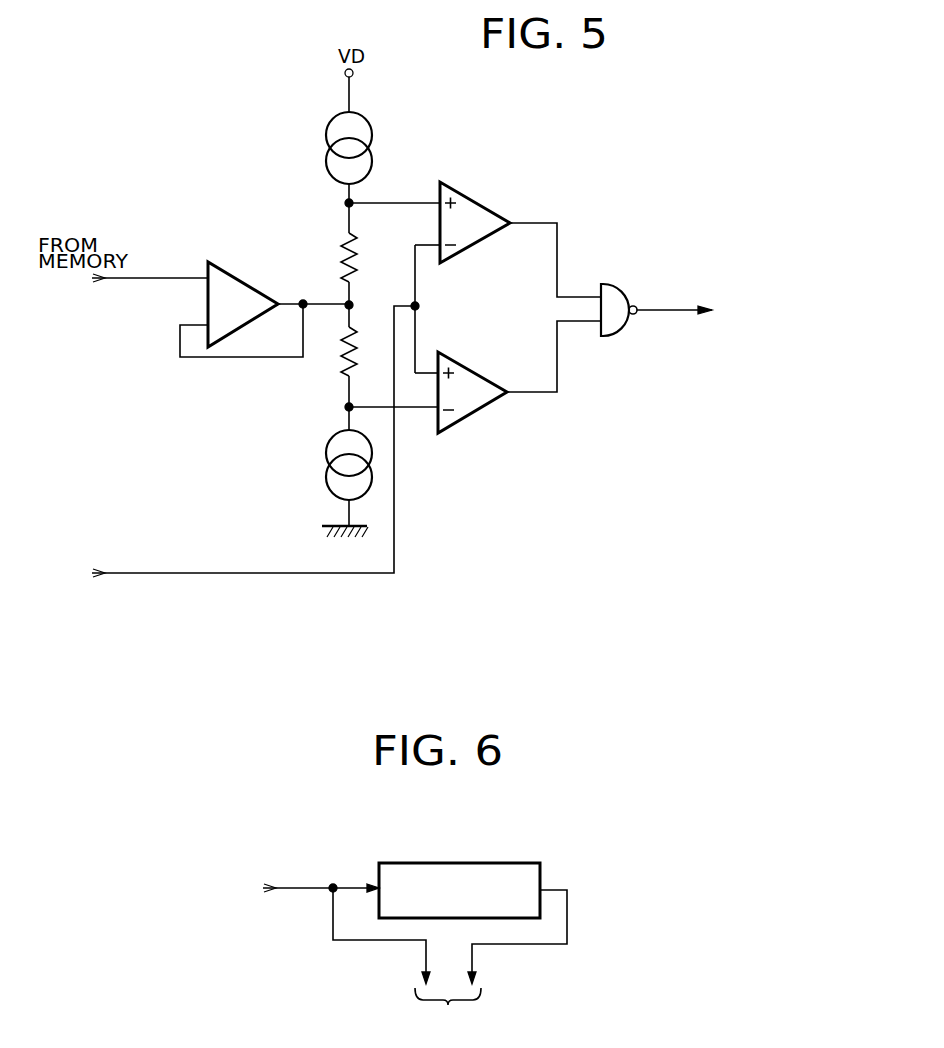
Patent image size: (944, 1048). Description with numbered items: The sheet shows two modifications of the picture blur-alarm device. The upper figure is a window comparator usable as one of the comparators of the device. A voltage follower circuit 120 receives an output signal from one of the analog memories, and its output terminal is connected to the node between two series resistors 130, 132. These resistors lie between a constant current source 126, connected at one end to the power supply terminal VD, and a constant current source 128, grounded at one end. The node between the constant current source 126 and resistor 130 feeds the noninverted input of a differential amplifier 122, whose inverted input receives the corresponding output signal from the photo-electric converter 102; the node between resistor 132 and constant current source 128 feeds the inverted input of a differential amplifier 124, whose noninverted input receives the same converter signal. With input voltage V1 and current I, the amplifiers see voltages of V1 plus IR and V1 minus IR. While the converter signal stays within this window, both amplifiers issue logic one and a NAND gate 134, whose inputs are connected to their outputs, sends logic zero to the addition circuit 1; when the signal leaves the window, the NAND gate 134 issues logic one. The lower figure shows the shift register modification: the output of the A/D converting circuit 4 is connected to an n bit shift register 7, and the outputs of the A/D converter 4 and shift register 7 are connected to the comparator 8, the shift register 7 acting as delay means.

In FIG. 5, the voltage follower circuit 120 is at (221, 262).
In FIG. 5, the differential amplifier 122 is at (468, 252).
In FIG. 5, the differential amplifier 124 is at (462, 420).
In FIG. 5, the constant current source 126 is at (372, 136).
In FIG. 5, the constant current source 128 is at (324, 474).
In FIG. 5, the resistor 130 is at (341, 246).
In FIG. 5, the resistor 132 is at (344, 362).
In FIG. 5, the NAND gate 134 is at (607, 338).
In FIG. 5, the photo-electric converter 102 is at (225, 441).
In FIG. 5, the addition circuit 1 is at (718, 289).
In FIG. 6, the n bit shift register 7 is at (500, 862).
In FIG. 6, the A/D converter 4 is at (249, 886).
In FIG. 6, the comparator 8 is at (450, 960).